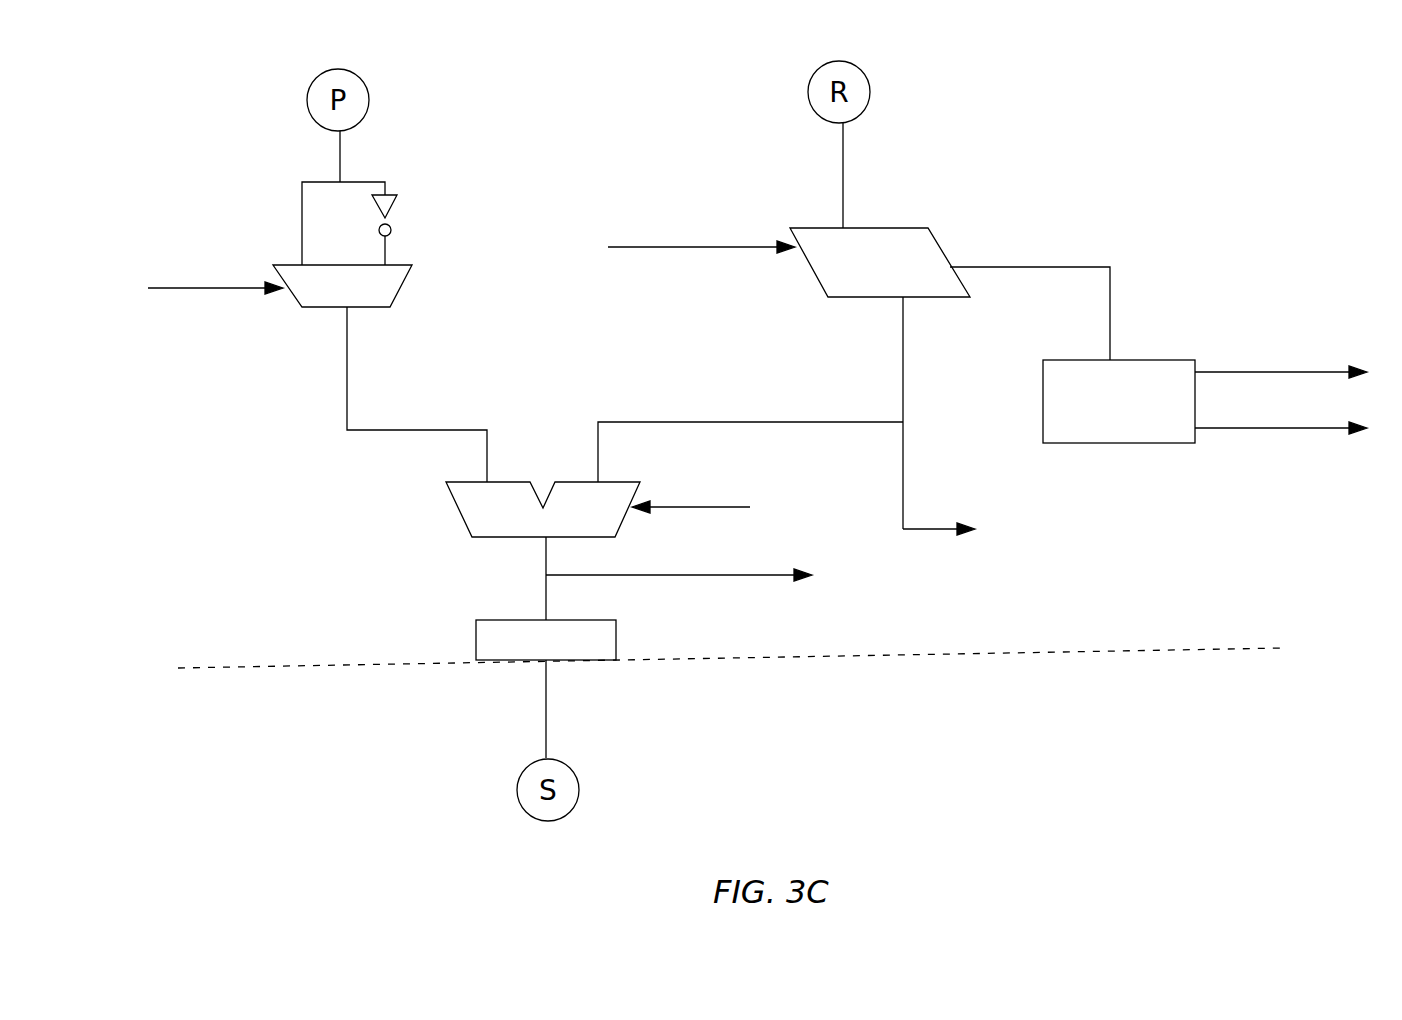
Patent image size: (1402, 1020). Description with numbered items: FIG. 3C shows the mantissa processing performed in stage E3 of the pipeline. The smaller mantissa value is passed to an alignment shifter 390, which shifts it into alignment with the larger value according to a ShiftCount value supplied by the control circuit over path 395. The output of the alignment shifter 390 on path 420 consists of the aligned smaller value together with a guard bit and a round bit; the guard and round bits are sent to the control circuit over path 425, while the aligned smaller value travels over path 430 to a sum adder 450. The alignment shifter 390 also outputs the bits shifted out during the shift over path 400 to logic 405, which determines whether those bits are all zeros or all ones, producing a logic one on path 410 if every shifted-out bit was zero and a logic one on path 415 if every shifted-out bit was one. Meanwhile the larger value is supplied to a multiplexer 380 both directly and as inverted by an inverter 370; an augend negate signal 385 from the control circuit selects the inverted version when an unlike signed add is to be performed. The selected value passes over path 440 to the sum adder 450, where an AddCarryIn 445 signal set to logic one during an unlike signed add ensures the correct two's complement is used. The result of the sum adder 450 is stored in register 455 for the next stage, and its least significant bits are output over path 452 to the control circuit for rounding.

The inverter 370 is at (396, 212).
The multiplexer 380 is at (390, 302).
The augend negate signal 385 is at (160, 290).
The alignment shifter 390 is at (862, 226).
The path 395 is at (650, 250).
The path 400 is at (1028, 266).
The logic 405 is at (1123, 358).
The path 410 is at (1232, 370).
The path 415 is at (1232, 426).
The path 420 is at (905, 385).
The path 425 is at (908, 532).
The path 430 is at (825, 420).
The path 440 is at (375, 428).
The AddCarryIn signal 445 is at (655, 512).
The sum adder 450 is at (558, 540).
The path 452 is at (738, 572).
The register 455 is at (616, 640).